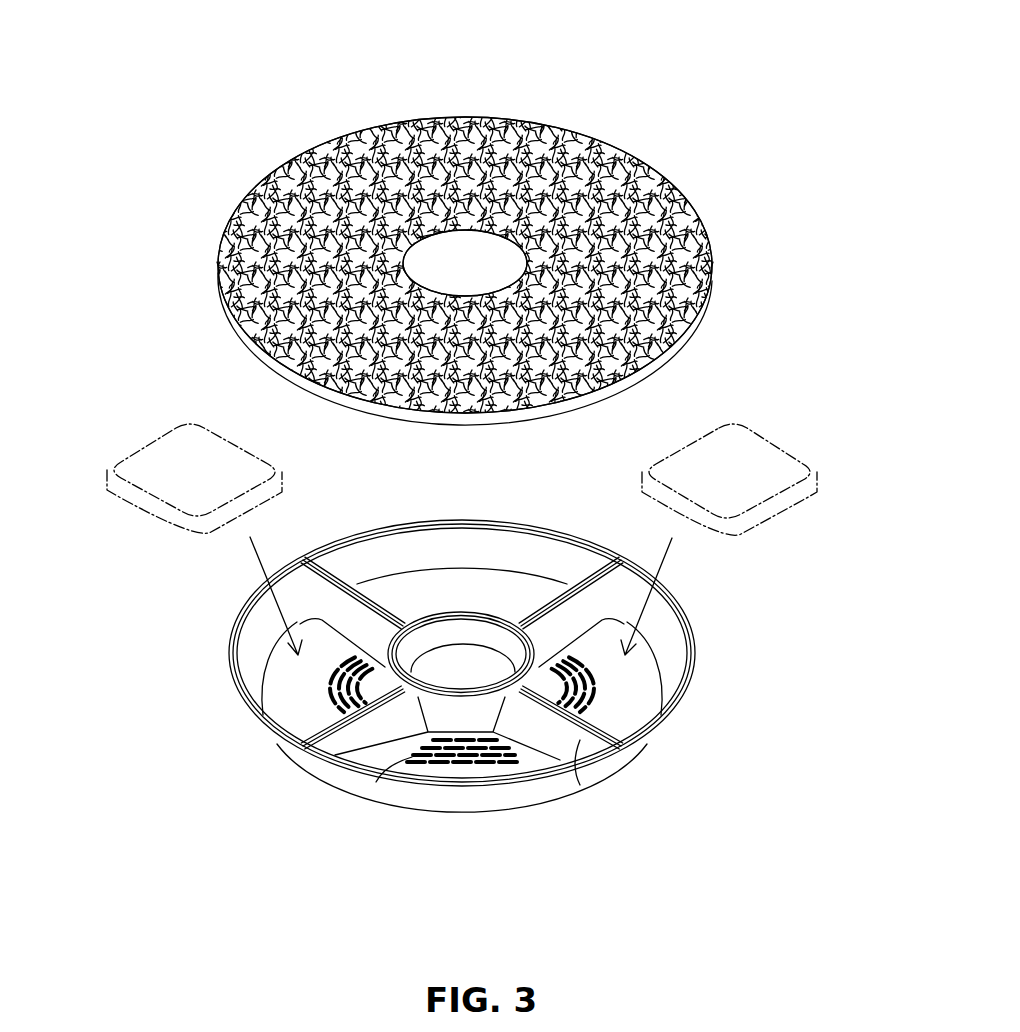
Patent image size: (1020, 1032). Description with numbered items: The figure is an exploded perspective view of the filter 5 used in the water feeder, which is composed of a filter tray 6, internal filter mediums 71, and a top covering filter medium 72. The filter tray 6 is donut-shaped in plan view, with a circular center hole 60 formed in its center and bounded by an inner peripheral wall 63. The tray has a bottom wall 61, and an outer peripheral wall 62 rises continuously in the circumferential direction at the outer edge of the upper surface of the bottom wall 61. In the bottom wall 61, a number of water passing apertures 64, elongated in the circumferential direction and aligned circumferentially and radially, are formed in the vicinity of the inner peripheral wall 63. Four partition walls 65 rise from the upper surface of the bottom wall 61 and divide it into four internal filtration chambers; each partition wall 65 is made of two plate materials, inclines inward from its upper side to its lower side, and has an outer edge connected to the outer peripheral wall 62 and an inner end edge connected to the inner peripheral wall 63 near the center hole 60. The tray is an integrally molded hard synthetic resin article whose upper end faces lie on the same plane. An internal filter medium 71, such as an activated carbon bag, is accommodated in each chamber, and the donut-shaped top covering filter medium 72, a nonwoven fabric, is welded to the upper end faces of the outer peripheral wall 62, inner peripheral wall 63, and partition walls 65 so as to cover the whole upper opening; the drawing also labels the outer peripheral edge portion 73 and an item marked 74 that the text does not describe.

The filter 5 is at (515, 215).
The top covering filter medium 72 is at (485, 215).
The outer peripheral edge portion 73 is at (617, 147).
The central opening 74 is at (485, 242).
The internal filter medium 71 is at (172, 450).
The filter tray 6 is at (468, 661).
The center hole 60 is at (494, 660).
The bottom wall 61 is at (638, 696).
The outer peripheral wall 62 is at (255, 640).
The inner peripheral wall 63 is at (465, 718).
The water passing apertures 64 is at (330, 683).
The partition wall 65 is at (345, 607).